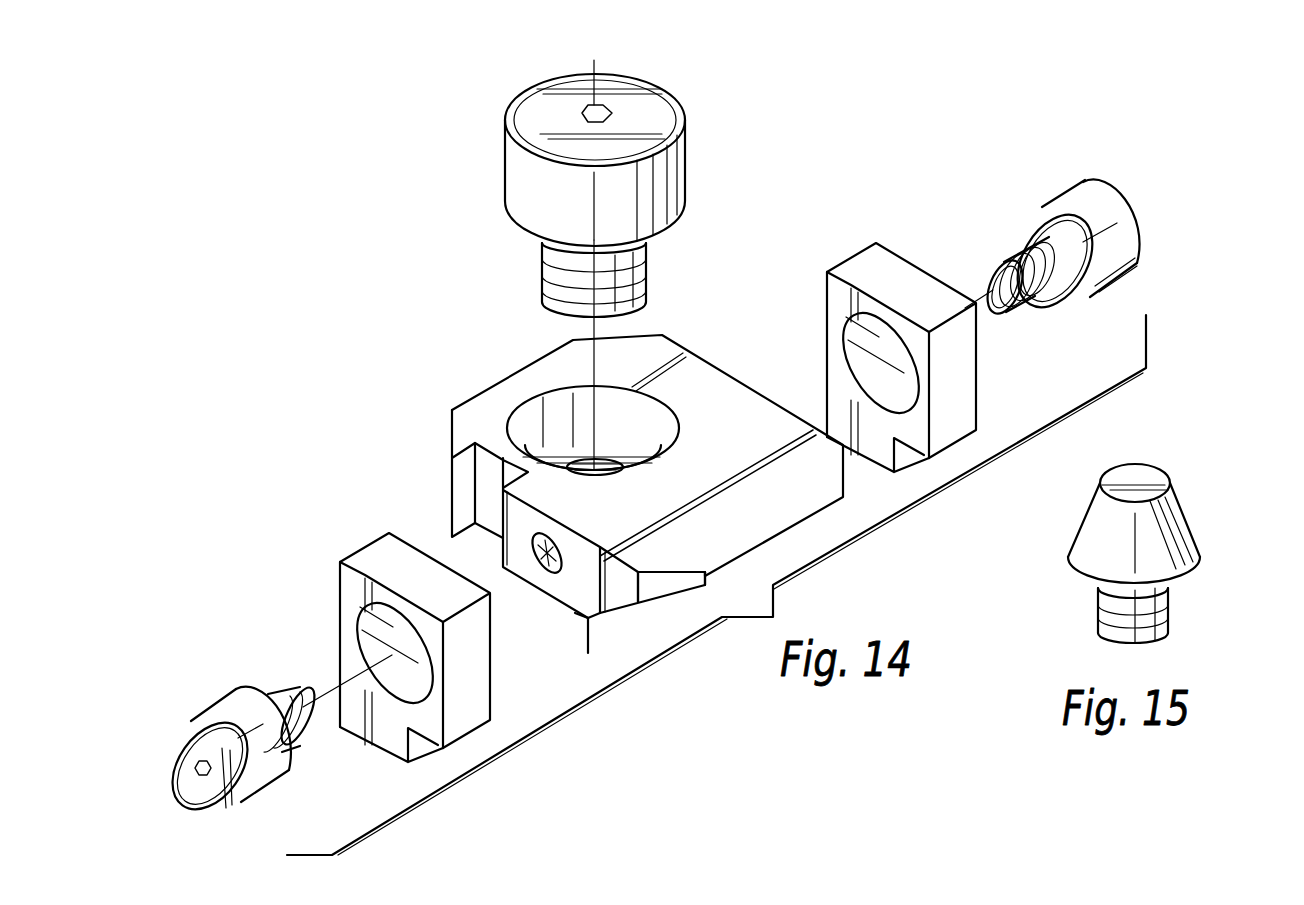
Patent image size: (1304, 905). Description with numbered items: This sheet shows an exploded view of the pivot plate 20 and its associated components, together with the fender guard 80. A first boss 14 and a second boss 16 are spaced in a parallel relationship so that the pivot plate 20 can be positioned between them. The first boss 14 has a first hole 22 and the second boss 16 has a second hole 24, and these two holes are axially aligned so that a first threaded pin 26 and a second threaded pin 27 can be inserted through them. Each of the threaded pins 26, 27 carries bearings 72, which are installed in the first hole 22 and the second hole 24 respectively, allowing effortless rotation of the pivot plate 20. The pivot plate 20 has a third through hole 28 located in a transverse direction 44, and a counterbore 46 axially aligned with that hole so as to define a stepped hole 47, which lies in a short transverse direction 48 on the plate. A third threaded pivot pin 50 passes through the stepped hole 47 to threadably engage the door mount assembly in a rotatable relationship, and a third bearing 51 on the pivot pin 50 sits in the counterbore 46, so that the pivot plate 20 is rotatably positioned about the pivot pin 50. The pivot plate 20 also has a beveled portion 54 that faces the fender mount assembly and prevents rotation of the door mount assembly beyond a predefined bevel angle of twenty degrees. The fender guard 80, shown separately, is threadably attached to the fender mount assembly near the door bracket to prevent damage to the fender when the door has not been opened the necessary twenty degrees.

In FIG. 14, the first boss 14 is at (869, 346).
In FIG. 14, the second boss 16 is at (381, 629).
In FIG. 14, the pivot plate 20 is at (622, 491).
In FIG. 14, the first hole 22 is at (852, 322).
In FIG. 14, the second hole 24 is at (377, 630).
In FIG. 14, the first threaded pin 26 is at (1001, 255).
In FIG. 14, the second threaded pin 27 is at (281, 691).
In FIG. 14, the third through hole 28 is at (601, 466).
In FIG. 14, the transverse direction 44 is at (488, 563).
In FIG. 14, the counterbore 46 is at (540, 397).
In FIG. 14, the stepped hole 47 is at (535, 415).
In FIG. 14, the short transverse direction 48 is at (585, 326).
In FIG. 14, the third threaded pivot pin 50 is at (641, 283).
In FIG. 14, the third bearing 51 is at (682, 150).
In FIG. 14, the beveled portion 54 is at (662, 602).
In FIG. 14, the bearings 72 is at (662, 476).
In FIG. 15, the fender guard 80 is at (1183, 513).